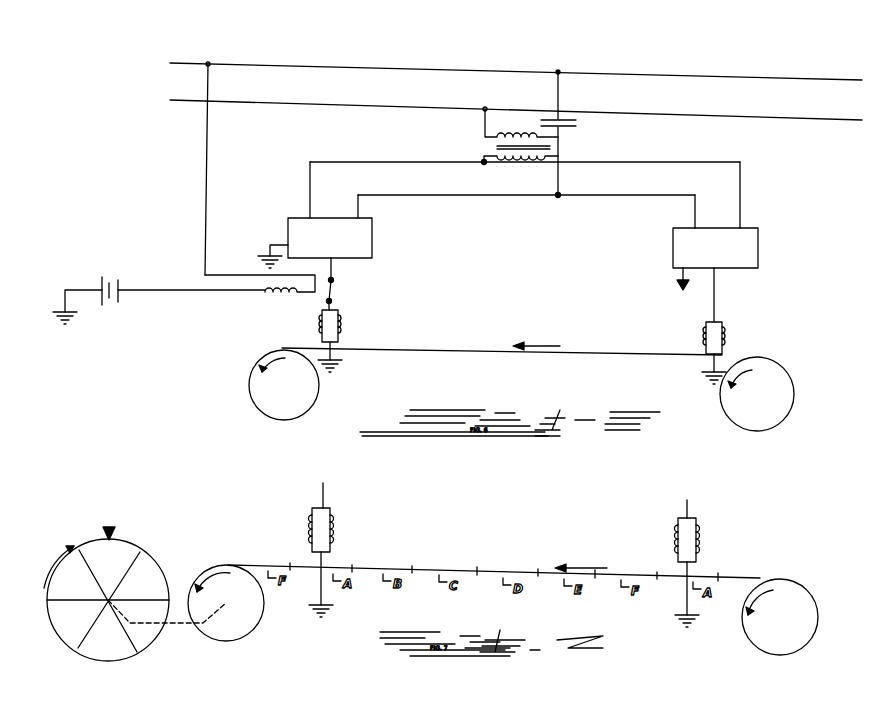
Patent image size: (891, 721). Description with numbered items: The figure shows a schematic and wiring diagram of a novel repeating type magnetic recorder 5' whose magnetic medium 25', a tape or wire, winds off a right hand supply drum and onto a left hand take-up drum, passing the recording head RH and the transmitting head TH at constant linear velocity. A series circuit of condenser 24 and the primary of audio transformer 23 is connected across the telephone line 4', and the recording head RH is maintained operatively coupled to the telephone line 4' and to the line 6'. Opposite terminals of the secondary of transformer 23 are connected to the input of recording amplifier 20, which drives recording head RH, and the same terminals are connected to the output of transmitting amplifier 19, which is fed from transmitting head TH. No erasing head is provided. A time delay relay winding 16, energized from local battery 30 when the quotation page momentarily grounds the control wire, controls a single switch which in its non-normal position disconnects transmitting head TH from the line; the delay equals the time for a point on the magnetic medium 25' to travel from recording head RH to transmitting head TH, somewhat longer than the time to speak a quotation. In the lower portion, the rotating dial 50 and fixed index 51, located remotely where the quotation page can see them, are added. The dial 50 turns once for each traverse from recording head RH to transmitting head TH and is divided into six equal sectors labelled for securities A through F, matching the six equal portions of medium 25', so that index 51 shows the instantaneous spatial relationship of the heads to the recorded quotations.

In FIG. 6, the telephone line 4' is at (512, 160).
In FIG. 6, the line 6' is at (810, 72).
In FIG. 6, the audio transformer 23 is at (485, 142).
In FIG. 6, the condenser 24 is at (573, 124).
In FIG. 6, the transmitting amplifier 19 is at (372, 246).
In FIG. 6, the recording amplifier 20 is at (758, 252).
In FIG. 6, the local battery 30 is at (102, 279).
In FIG. 6, the time delay relay winding 16 is at (274, 300).
In FIG. 6, the transmitting head TH is at (340, 316).
In FIG. 7, the transmitting head TH is at (332, 508).
In FIG. 6, the recording head RH is at (722, 318).
In FIG. 7, the recording head RH is at (697, 514).
In FIG. 6, the magnetic medium 25' is at (502, 343).
In FIG. 7, the magnetic medium 25' is at (507, 569).
In FIG. 6, the magnetic recorder 5' is at (552, 361).
In FIG. 7, the magnetic recorder 5' is at (554, 557).
In FIG. 7, the rotating dial 50 is at (156, 556).
In FIG. 7, the fixed index 51 is at (115, 530).